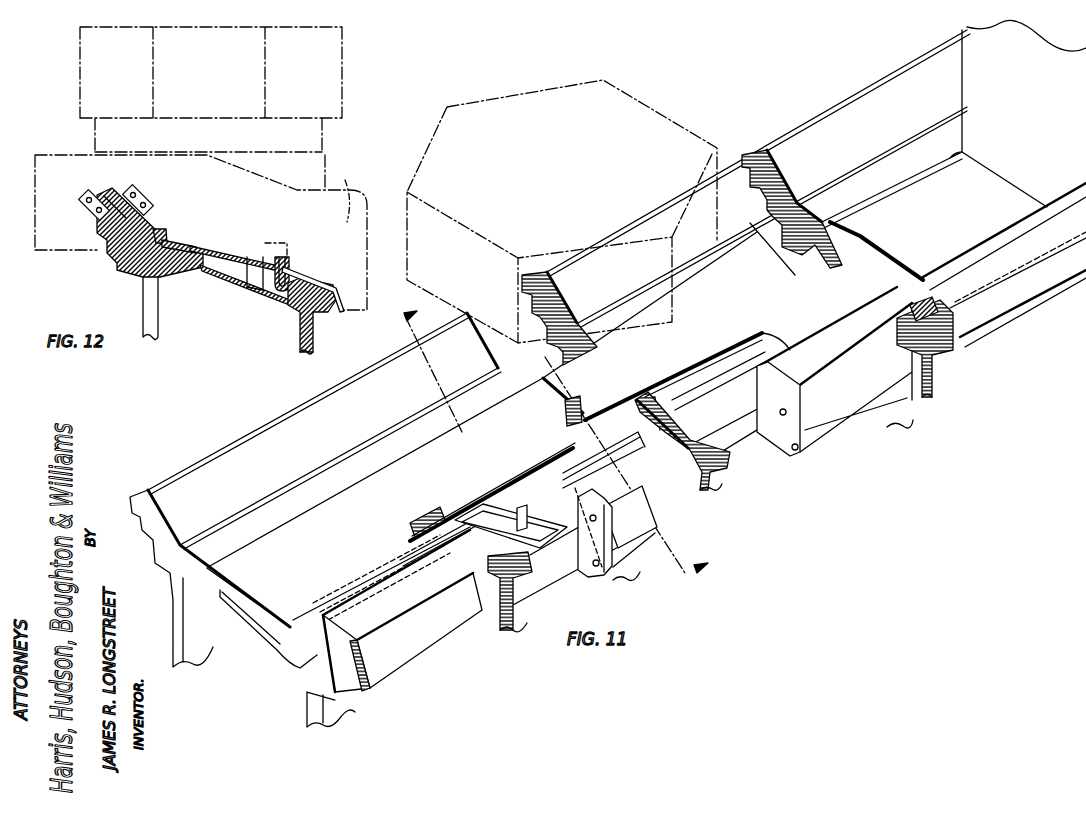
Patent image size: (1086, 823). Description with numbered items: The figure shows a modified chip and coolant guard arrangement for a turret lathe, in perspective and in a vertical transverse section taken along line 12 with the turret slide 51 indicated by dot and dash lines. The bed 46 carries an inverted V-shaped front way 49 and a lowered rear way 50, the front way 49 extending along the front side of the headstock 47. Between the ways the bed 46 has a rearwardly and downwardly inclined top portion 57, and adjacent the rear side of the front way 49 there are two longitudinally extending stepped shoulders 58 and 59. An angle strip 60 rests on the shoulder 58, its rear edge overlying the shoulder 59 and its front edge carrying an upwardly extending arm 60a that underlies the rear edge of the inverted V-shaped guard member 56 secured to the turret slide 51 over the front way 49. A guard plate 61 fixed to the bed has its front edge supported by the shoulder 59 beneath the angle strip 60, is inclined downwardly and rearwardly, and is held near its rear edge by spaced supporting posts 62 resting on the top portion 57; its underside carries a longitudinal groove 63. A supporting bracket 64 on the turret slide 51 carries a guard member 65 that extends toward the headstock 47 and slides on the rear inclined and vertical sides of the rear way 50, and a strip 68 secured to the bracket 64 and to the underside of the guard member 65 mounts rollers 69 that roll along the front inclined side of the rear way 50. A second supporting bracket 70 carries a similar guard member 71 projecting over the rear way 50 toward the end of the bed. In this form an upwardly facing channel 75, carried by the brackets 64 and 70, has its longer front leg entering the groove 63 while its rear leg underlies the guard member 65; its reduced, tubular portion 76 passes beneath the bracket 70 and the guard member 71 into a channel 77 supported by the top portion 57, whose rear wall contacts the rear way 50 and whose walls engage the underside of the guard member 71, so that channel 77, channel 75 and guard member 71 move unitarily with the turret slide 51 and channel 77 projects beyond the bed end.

In FIG. 11, the section line 12— 12 is at (569, 436).
In FIG. 12, the bed 46 is at (159, 328).
In FIG. 11, the headstock 47 is at (1048, 70).
In FIG. 12, the front way 49 is at (118, 236).
In FIG. 11, the front way 49 is at (143, 507).
In FIG. 12, the rear way 50 is at (321, 315).
In FIG. 11, the rear way 50 is at (310, 673).
In FIG. 12, the turret slide 51 is at (348, 190).
In FIG. 12, the guard member 56 is at (96, 196).
In FIG. 12, the top portion 57 is at (233, 285).
In FIG. 11, the shoulder 58 is at (200, 548).
In FIG. 11, the shoulder 59 is at (840, 231).
In FIG. 12, the angle strip 60 is at (166, 242).
In FIG. 12, the arm 60a is at (162, 232).
In FIG. 12, the guard plate 61 is at (228, 243).
In FIG. 11, the guard plate 61 is at (334, 556).
In FIG. 12, the supporting posts 62 is at (256, 262).
In FIG. 11, the groove 63 is at (264, 623).
In FIG. 11, the supporting bracket 64 is at (827, 368).
In FIG. 12, the guard member 65 is at (334, 292).
In FIG. 11, the guard member 65 is at (1048, 277).
In FIG. 11, the strip 68 is at (885, 320).
In FIG. 11, the rollers 69 is at (940, 293).
In FIG. 11, the supporting bracket 70 is at (607, 583).
In FIG. 11, the guard member 71 is at (428, 642).
In FIG. 12, the channel 75 is at (282, 266).
In FIG. 11, the channel 75 is at (641, 455).
In FIG. 11, the tubular portion 76 is at (510, 487).
In FIG. 11, the channel 77 is at (477, 507).